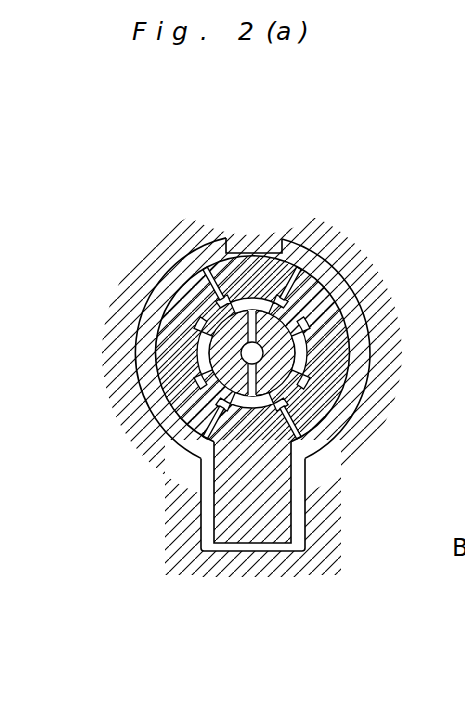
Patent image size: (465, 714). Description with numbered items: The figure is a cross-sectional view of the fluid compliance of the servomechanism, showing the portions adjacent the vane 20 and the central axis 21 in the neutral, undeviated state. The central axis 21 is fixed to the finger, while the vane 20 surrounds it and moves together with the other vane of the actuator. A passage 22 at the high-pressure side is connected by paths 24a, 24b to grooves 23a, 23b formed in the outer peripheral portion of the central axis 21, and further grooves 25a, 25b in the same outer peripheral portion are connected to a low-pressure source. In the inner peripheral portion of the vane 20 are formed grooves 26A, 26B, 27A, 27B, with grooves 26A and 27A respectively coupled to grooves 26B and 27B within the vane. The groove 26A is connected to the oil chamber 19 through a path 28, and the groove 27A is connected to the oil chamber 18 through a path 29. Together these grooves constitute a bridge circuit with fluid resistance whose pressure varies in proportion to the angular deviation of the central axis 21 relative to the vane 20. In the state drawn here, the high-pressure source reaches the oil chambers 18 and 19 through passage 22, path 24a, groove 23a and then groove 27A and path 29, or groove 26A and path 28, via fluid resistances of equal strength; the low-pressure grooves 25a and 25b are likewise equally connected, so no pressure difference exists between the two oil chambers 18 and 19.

The oil chamber 18 is at (165, 432).
The oil chamber 19 is at (317, 443).
The vane B 20 is at (283, 500).
The central axis 21 is at (205, 356).
The passage 22 is at (268, 350).
The groove 23a is at (258, 318).
The groove 23b is at (250, 420).
The path 24a is at (200, 318).
The path 24b is at (203, 388).
The groove 25a is at (297, 295).
The groove 25b is at (188, 338).
The groove 26A is at (292, 290).
The groove 26B is at (205, 440).
The groove 27A is at (213, 297).
The groove 27B is at (325, 422).
The path 28 is at (347, 275).
The path 29 is at (160, 285).